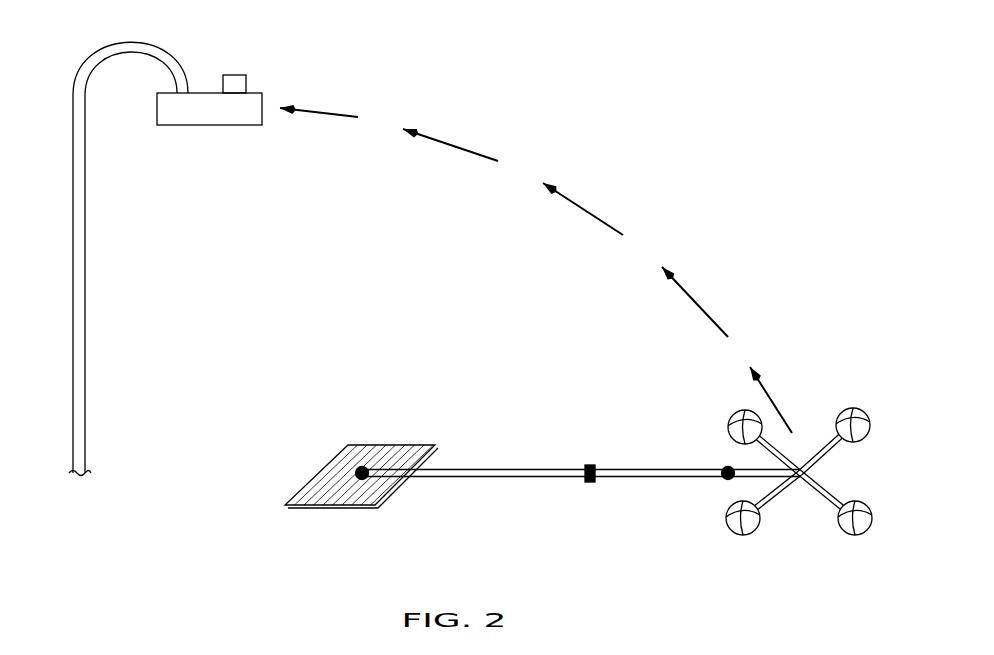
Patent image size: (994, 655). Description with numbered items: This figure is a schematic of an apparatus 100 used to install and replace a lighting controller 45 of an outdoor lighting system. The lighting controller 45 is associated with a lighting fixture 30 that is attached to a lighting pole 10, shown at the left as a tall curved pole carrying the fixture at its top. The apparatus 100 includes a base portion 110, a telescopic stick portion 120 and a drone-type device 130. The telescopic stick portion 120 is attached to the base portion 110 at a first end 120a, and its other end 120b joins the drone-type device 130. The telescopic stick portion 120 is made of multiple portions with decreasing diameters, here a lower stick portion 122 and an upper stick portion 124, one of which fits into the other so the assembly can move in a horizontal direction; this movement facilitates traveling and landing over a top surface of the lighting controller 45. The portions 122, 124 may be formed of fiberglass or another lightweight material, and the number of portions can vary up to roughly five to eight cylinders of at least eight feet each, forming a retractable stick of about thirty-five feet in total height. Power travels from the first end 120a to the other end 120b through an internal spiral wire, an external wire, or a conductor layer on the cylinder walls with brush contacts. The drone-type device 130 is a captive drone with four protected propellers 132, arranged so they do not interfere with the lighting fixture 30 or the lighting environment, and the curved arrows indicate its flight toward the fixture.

The lighting pole 10 is at (72, 282).
The lighting fixture 30 is at (208, 128).
The lighting controller 45 is at (235, 73).
The apparatus 100 is at (768, 222).
The base portion 110 is at (374, 440).
The telescopic stick portion 120 is at (581, 477).
The first end 120a is at (395, 465).
The other end 120b is at (702, 455).
The lower stick portion 122 is at (481, 478).
The upper stick portion 124 is at (658, 478).
The drone-type device 130 is at (830, 488).
The propellers 132 is at (841, 534).